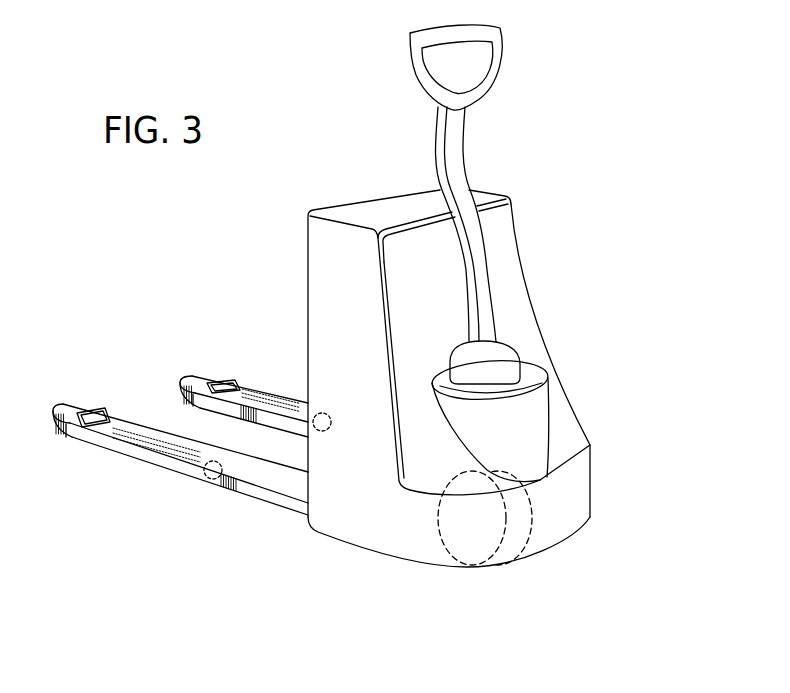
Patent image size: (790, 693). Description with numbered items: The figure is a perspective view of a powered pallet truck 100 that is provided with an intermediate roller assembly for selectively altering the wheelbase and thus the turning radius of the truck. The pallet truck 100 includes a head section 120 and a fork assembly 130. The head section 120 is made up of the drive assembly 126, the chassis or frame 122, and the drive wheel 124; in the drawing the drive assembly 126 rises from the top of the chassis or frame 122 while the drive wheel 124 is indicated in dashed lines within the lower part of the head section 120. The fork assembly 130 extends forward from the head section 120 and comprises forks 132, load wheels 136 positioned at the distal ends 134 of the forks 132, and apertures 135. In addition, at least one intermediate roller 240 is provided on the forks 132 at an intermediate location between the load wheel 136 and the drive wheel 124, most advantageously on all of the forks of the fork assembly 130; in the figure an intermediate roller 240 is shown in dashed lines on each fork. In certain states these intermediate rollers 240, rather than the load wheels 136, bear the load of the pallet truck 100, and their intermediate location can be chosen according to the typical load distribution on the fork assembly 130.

The pallet truck 100 is at (615, 93).
The head section 120 is at (592, 592).
The chassis or frame 122 is at (361, 287).
The drive wheel 124 is at (517, 532).
The drive assembly 126 is at (423, 46).
The fork assembly 130 is at (305, 592).
The forks 132 is at (258, 403).
The distal ends 134 is at (192, 377).
The apertures 135 is at (212, 384).
The load wheels 136 is at (224, 382).
The intermediate roller 240 is at (212, 479).